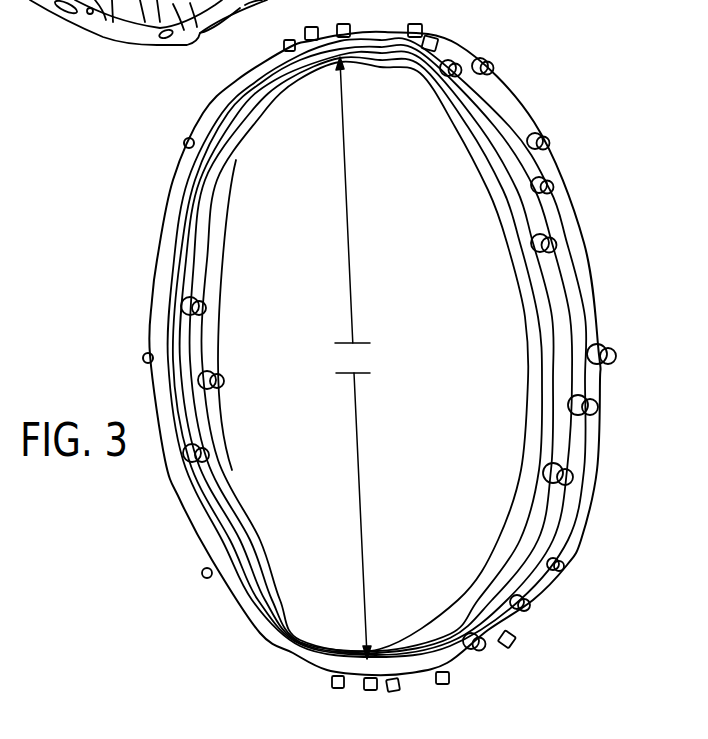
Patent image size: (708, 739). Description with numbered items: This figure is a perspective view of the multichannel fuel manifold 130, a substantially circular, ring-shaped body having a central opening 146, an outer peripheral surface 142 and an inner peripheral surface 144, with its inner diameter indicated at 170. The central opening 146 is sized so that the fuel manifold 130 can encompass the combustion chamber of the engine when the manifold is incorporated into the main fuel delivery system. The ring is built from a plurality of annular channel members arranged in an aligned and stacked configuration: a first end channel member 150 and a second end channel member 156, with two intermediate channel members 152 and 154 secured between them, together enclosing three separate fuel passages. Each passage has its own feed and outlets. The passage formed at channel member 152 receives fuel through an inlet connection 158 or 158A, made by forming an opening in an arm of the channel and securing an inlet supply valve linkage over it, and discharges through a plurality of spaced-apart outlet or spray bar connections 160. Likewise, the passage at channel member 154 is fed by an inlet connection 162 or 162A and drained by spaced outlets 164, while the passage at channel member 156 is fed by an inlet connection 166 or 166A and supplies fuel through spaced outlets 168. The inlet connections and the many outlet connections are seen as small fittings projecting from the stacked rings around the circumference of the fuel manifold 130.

The multichannel fuel manifold 130 is at (137, 229).
The outer peripheral surface 142 is at (577, 442).
The inner peripheral surface 144 is at (263, 582).
The central opening 146 is at (260, 484).
The first end channel member 150 is at (183, 178).
The intermediate channel member 152 is at (526, 565).
The intermediate channel member 154 is at (559, 517).
The second end channel member 156 is at (522, 122).
The inlet connection 158 is at (206, 455).
The inlet connection 158A is at (572, 478).
The outlet connection 160 is at (552, 242).
The inlet connection 162 is at (206, 308).
The inlet connection 162A is at (592, 406).
The outlet connection 164 is at (544, 180).
The inlet connection 166 is at (223, 380).
The inlet connection 166A is at (612, 355).
The outlet connection 168 is at (417, 23).
The inner diameter 170 is at (353, 358).